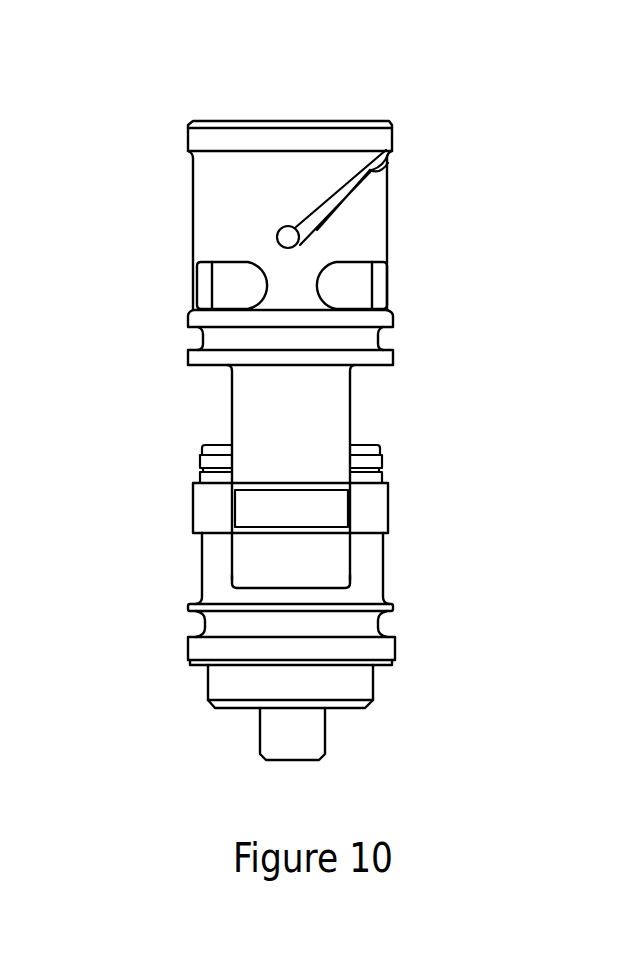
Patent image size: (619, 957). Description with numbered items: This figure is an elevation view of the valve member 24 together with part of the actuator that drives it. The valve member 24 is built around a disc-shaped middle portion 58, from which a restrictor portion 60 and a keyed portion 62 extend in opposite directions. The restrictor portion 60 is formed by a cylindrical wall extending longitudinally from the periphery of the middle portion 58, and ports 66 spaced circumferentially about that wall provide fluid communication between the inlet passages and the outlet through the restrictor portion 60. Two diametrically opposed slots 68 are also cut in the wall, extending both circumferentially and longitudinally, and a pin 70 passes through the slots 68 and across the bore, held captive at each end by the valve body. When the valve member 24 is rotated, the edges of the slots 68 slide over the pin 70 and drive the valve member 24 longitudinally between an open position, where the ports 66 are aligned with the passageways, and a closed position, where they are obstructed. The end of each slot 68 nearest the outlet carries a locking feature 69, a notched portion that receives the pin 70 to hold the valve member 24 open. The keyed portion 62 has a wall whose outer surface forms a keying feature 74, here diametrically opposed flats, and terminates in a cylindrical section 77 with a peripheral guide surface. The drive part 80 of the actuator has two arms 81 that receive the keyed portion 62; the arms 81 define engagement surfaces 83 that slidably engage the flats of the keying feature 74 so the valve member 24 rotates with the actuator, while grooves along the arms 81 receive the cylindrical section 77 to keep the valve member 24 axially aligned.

The valve member 24 is at (186, 417).
The disc-shaped middle portion 58 is at (355, 332).
The restrictor portion 60 is at (198, 127).
The keyed portion 62 is at (322, 415).
The ports 66 is at (235, 269).
The slots 68 is at (362, 207).
The locking feature 69 is at (386, 162).
The pin 70 is at (288, 226).
The keying feature 74 is at (346, 426).
The cylindrical section 77 is at (323, 515).
The drive part 80 is at (364, 614).
The arms 81 is at (372, 502).
The engagement surfaces 83 is at (234, 520).